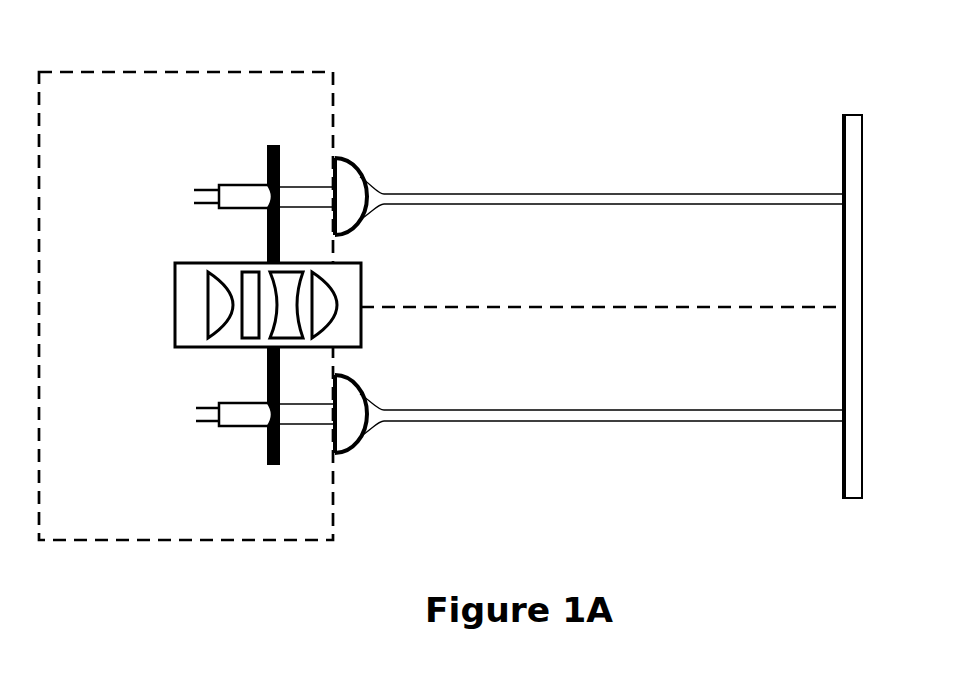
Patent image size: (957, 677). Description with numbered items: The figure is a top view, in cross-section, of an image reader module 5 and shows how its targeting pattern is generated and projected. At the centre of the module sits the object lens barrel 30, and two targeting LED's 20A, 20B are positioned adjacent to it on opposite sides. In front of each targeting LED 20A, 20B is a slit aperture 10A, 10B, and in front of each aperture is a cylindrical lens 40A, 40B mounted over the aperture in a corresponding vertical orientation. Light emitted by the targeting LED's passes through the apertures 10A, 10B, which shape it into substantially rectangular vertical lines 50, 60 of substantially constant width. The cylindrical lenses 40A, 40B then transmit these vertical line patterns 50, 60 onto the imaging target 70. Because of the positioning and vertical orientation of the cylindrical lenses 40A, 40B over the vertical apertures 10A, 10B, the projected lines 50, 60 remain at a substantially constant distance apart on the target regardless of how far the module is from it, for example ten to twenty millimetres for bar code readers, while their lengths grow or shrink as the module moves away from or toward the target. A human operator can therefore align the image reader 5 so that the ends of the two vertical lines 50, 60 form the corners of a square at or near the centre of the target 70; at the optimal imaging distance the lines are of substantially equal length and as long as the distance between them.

The image reader module 5 is at (333, 70).
The aperture 10A is at (267, 146).
The aperture 10B is at (268, 464).
The targeting LED 20A is at (217, 186).
The targeting LED 20B is at (217, 426).
The object lens barrel 30 is at (175, 307).
The cylindrical lens 40A is at (347, 156).
The cylindrical lens 40B is at (346, 454).
The vertical line 50 is at (533, 193).
The vertical line 60 is at (543, 422).
The imaging target 70 is at (863, 115).